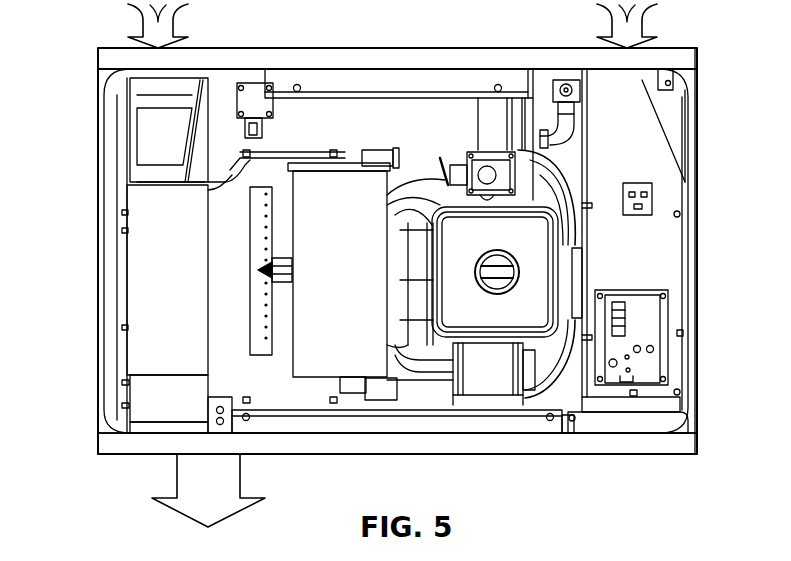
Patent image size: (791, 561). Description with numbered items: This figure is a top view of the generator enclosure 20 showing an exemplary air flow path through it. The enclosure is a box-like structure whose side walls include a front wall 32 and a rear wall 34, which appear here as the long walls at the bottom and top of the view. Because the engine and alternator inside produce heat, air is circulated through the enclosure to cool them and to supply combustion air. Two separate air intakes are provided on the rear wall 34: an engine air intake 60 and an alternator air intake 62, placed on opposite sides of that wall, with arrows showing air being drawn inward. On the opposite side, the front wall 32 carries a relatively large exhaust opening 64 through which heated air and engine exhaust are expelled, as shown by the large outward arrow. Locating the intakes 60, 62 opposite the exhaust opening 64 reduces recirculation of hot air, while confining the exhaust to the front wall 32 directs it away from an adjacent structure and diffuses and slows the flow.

The generator 20 is at (75, 231).
The rear wall 34 is at (352, 47).
The front wall 32 is at (418, 455).
The alternator air intake 62 is at (142, 47).
The engine air intake 60 is at (652, 47).
The exhaust opening 64 is at (165, 455).